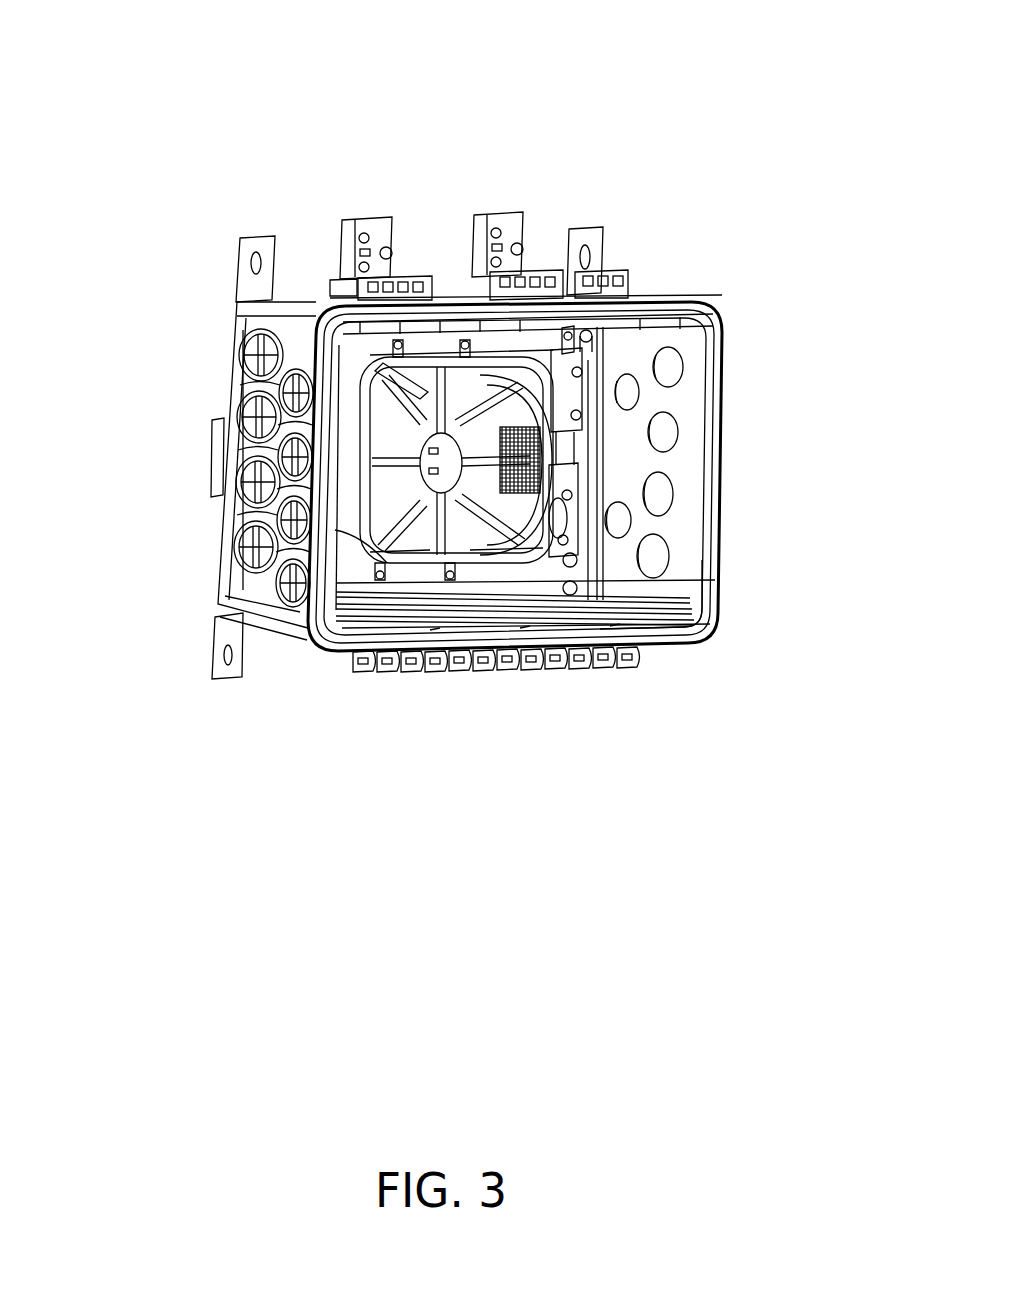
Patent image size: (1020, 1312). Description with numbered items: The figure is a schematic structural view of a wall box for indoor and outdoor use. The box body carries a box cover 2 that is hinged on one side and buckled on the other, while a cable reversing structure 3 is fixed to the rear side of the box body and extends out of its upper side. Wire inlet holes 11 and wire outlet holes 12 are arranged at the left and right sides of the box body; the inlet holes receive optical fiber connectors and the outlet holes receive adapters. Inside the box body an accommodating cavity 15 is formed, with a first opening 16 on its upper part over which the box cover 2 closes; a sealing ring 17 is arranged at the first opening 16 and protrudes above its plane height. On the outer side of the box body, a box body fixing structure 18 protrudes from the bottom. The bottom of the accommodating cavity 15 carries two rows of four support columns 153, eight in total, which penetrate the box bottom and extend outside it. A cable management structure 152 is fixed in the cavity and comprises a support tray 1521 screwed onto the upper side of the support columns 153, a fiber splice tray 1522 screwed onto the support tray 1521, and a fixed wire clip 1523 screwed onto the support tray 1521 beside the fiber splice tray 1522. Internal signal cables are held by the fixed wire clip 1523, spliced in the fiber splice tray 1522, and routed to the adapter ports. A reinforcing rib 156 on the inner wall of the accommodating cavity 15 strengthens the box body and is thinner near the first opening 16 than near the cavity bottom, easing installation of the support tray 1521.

The box cover 2 is at (288, 318).
The cable reversing structure 3 is at (383, 238).
The wire inlet hole 11 is at (622, 382).
The wire outlet hole 12 is at (250, 377).
The accommodating cavity 15 is at (337, 587).
The first opening 16 is at (670, 600).
The sealing ring 17 is at (537, 633).
The box body fixing structure 18 is at (225, 628).
The cable management structure 152 is at (647, 469).
The support column 153 is at (587, 340).
The reinforcing rib 156 is at (475, 623).
The support tray 1521 is at (513, 575).
The fiber splice tray 1522 is at (545, 447).
The fixed wire clip 1523 is at (567, 515).